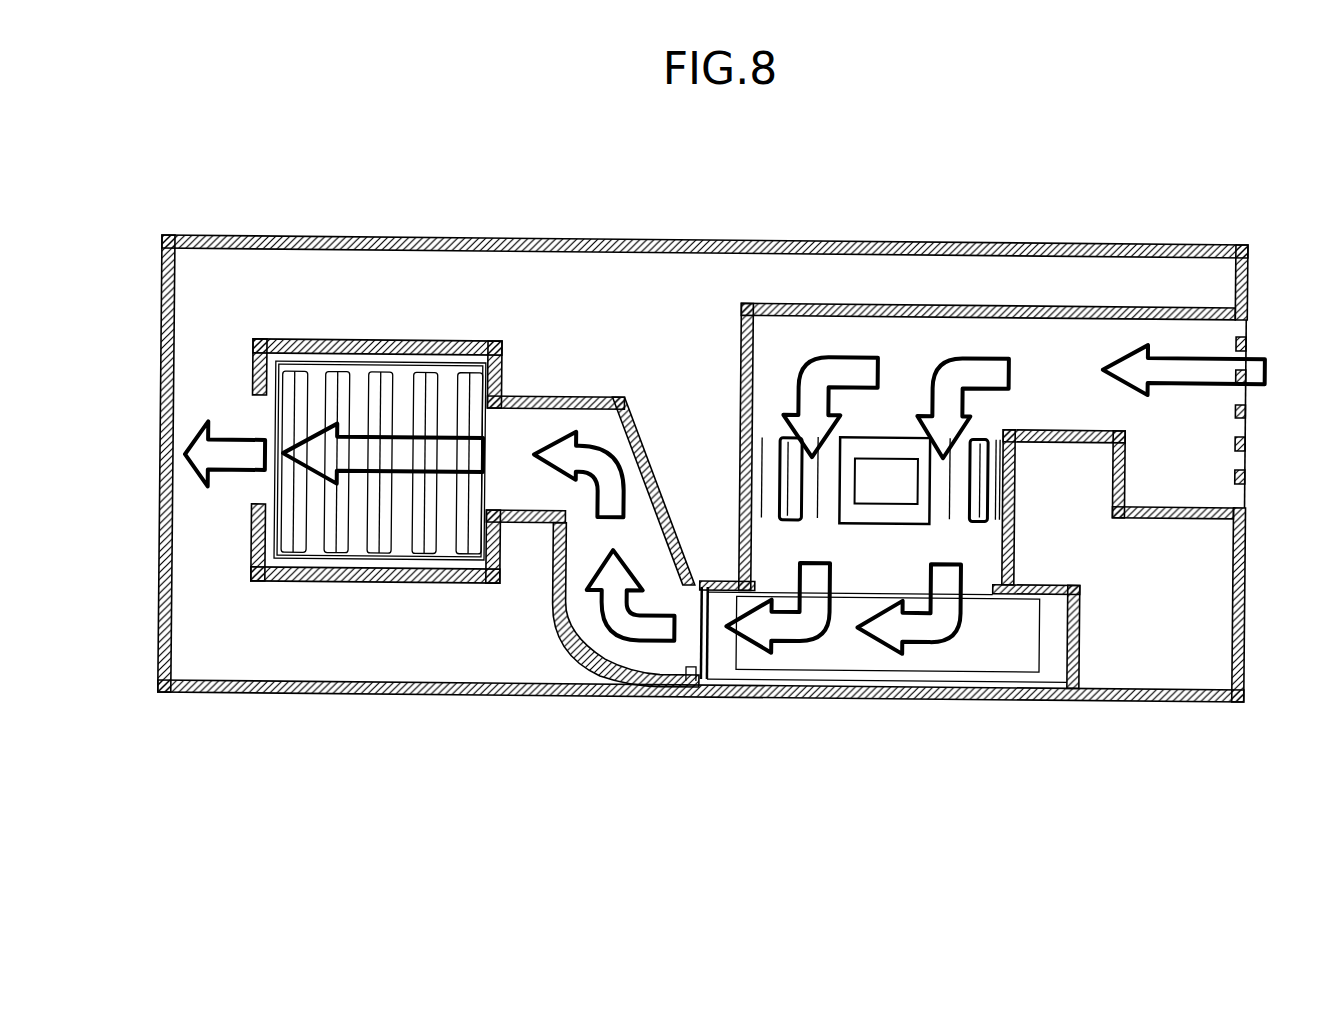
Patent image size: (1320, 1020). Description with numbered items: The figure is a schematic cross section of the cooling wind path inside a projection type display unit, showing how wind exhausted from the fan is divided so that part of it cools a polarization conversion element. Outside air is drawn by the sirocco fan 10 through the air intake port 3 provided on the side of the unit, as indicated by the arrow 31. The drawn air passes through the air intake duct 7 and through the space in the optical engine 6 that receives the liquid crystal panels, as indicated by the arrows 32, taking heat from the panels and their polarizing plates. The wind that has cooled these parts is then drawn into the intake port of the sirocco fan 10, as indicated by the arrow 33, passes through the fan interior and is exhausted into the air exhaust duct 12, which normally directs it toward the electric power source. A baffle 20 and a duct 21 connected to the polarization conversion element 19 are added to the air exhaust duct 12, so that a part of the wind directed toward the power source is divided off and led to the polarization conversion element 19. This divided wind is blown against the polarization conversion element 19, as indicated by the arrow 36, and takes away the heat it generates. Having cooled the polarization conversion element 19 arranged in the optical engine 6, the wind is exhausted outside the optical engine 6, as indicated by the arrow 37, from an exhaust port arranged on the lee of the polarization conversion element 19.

The air intake port 3 is at (1253, 448).
The optical engine 6 is at (740, 382).
The air intake duct 7 is at (1040, 358).
The sirocco fan 10 is at (1058, 653).
The air exhaust duct 12 is at (657, 470).
The polarization conversion element 19 is at (458, 515).
The baffle 20 is at (555, 640).
The duct 21 is at (525, 432).
The arrow 31 is at (1175, 370).
The arrows 32 is at (977, 370).
The arrow 33 is at (913, 633).
The arrow 36 is at (350, 445).
The arrow 37 is at (213, 248).